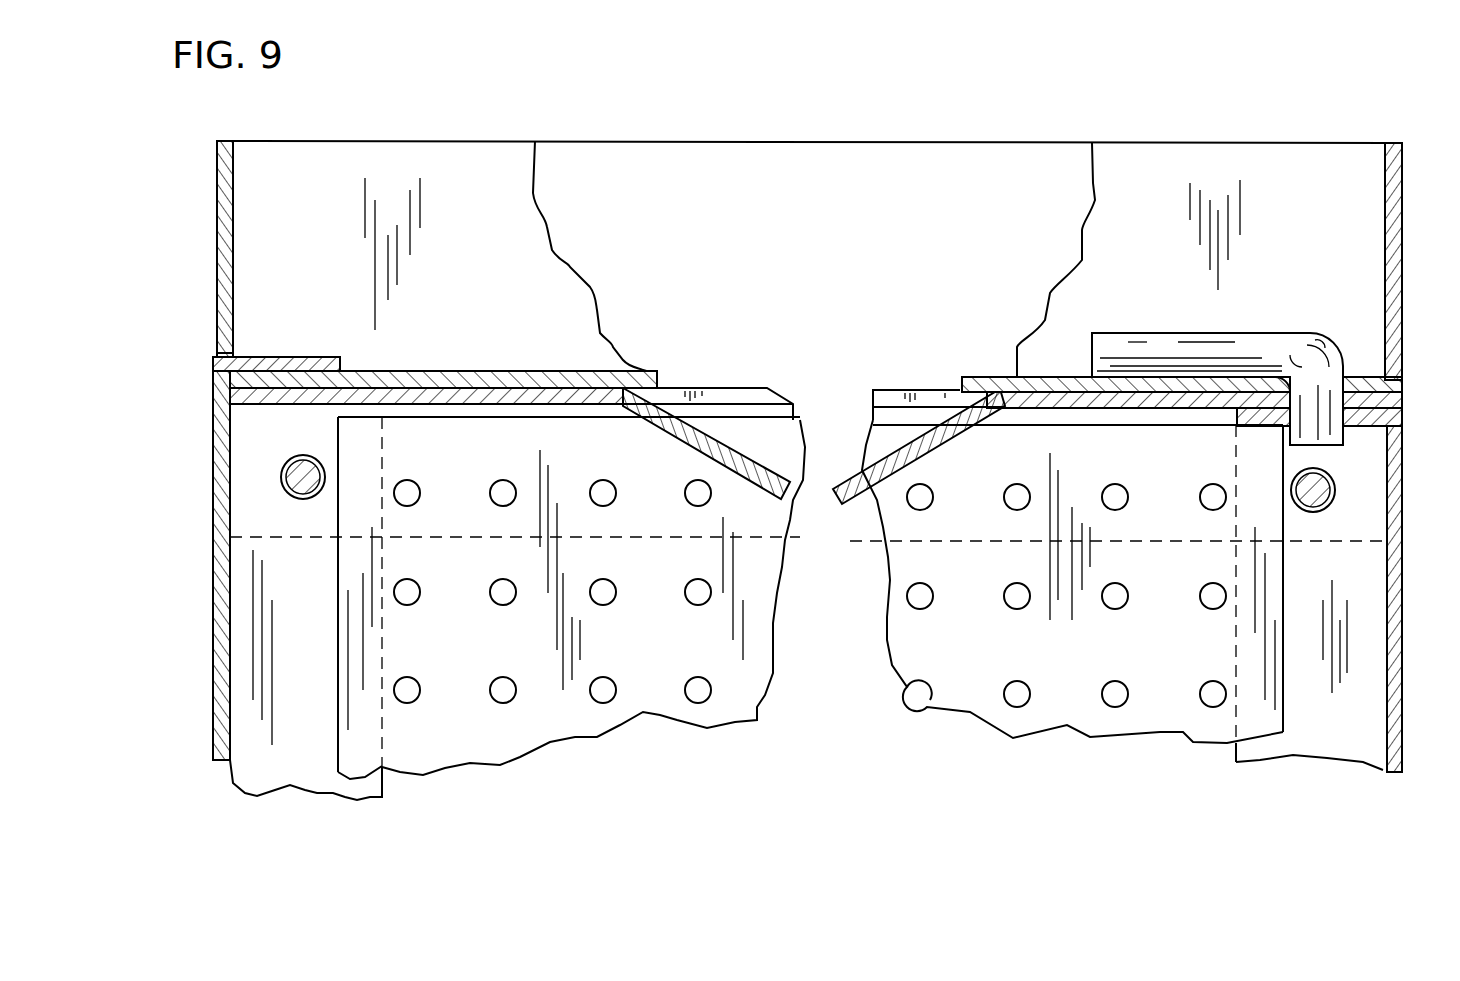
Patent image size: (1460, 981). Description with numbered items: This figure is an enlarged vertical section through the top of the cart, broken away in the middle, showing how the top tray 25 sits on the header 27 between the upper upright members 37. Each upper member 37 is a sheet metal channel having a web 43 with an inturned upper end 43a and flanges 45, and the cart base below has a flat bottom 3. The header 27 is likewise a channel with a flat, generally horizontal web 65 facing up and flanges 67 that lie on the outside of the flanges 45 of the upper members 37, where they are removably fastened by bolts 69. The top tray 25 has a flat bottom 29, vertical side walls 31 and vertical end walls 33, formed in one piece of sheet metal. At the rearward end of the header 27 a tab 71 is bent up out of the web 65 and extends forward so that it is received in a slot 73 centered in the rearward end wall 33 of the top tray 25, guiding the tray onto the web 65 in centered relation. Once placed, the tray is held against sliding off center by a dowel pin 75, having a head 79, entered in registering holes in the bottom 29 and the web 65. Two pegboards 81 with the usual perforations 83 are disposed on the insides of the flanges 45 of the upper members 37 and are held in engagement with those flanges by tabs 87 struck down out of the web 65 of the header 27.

The flat bottom 3 is at (1408, 542).
The top tray 25 is at (1402, 140).
The header 27 is at (1408, 405).
The flat bottom 29 is at (580, 371).
The vertical side walls 31 is at (452, 141).
The vertical end walls 33 is at (213, 213).
The upper member 37 is at (211, 690).
The web 43 is at (213, 740).
The inturned upper end 43a is at (1268, 418).
The flanges 45 is at (372, 785).
The web 65 is at (927, 390).
The flanges 67 is at (643, 537).
The bolts 69 is at (213, 510).
The tab 71 is at (338, 357).
The slot 73 is at (213, 353).
The dowel pin 75 is at (1345, 447).
The head 79 is at (1187, 350).
The pegboard 81 is at (950, 700).
The perforations 83 is at (690, 700).
The tabs 87 is at (858, 497).